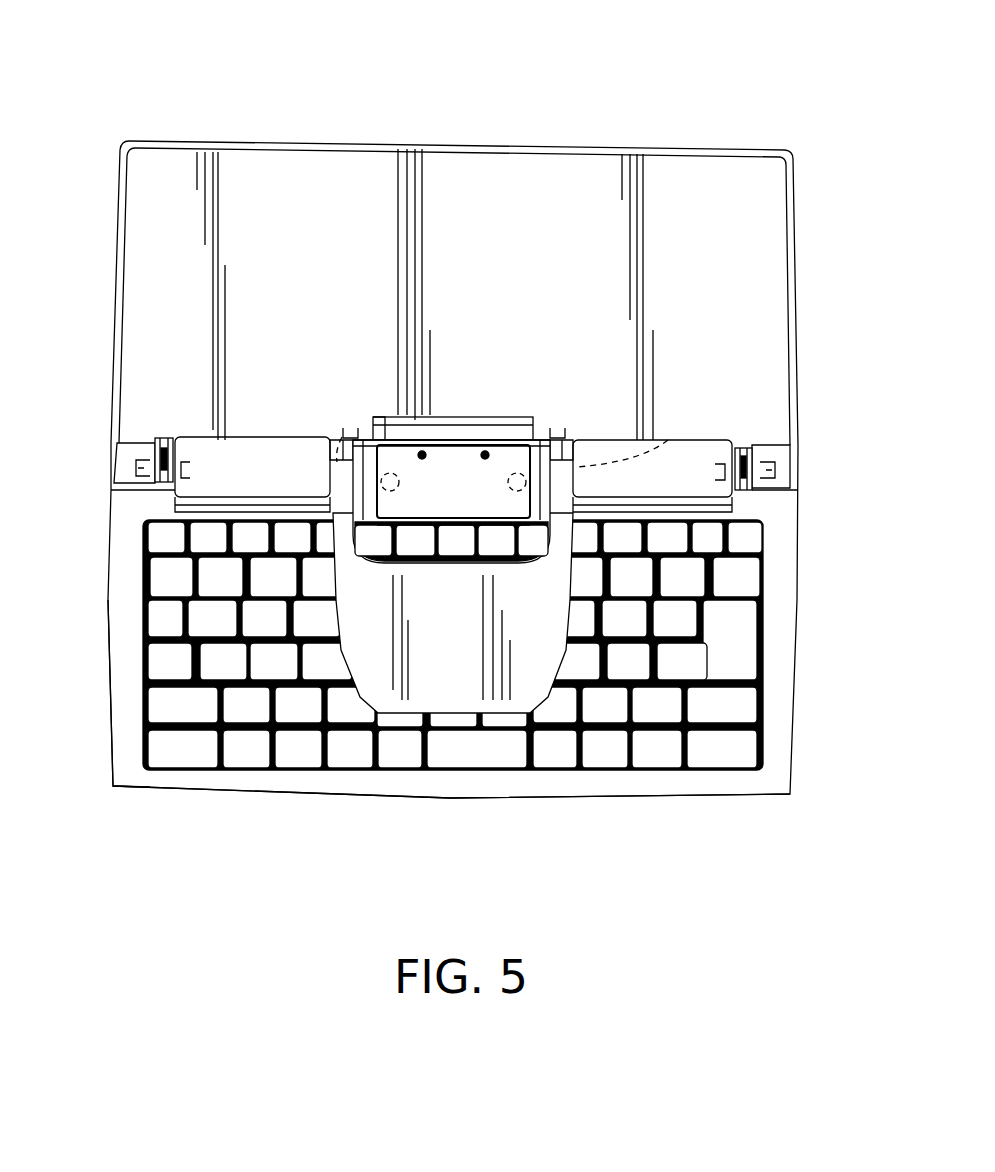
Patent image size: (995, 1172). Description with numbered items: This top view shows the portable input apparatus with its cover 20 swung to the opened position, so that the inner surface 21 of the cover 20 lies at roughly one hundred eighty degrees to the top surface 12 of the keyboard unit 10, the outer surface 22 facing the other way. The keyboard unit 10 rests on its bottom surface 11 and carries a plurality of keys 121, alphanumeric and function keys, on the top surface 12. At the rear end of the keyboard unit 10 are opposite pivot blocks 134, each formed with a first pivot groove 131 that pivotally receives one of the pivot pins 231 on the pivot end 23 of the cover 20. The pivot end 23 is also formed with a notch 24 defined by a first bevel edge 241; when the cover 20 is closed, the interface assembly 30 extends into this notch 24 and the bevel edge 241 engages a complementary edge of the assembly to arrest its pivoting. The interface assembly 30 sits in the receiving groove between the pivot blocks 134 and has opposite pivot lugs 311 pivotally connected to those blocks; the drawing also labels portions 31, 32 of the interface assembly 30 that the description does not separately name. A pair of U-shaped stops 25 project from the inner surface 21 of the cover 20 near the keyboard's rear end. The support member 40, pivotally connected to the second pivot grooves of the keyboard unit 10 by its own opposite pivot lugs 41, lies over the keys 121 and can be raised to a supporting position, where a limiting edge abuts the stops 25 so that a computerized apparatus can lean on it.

The keyboard unit 10 is at (180, 790).
The bottom surface 11 is at (648, 798).
The top surface 12 is at (138, 782).
The keys 121 is at (303, 757).
The first pivot groove 131 is at (165, 440).
The pivot blocks 134 is at (275, 465).
The cover 20 is at (425, 141).
The inner surface 21 is at (780, 257).
The outer surface 22 is at (800, 196).
The pivot end 23 is at (140, 447).
The pivot pins 231 is at (125, 462).
The notch 24 is at (405, 430).
The first bevel edge 241 is at (390, 418).
The U-shaped stops 25 is at (343, 430).
The interface assembly 30 is at (503, 455).
The top edge of module 31 is at (447, 440).
The pivot lugs 311 is at (365, 435).
The module plate 32 is at (483, 492).
The support member 40 is at (448, 695).
The pivot lugs 41 is at (342, 437).